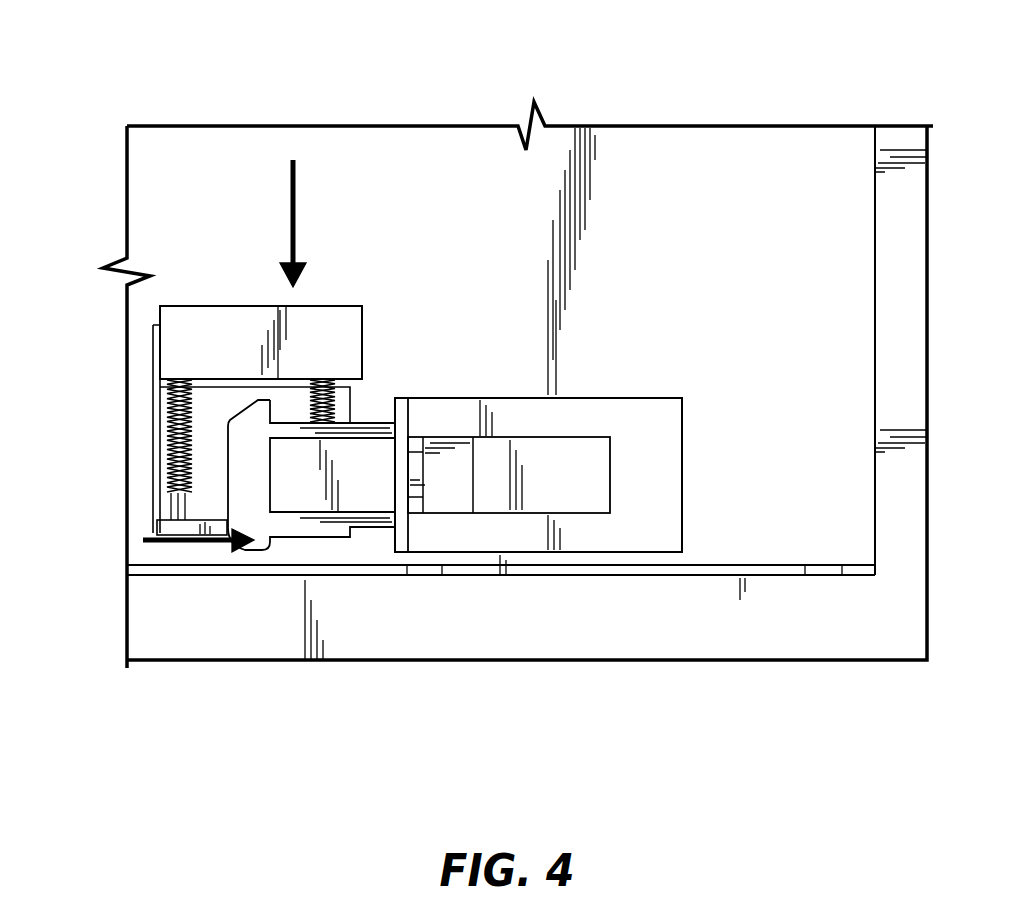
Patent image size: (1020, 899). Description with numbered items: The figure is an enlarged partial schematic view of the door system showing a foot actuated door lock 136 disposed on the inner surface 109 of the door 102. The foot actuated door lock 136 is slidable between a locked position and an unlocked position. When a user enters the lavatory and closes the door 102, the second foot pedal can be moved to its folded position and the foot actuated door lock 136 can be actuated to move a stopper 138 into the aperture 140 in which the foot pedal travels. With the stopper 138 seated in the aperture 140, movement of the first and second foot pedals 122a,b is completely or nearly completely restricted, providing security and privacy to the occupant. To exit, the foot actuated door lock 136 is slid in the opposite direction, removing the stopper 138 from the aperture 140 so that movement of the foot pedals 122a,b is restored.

The door 102 is at (335, 102).
The inner surface 109 is at (433, 162).
The first and second foot pedals 122a,b is at (187, 327).
The aperture 140 is at (207, 475).
The stopper 138 is at (288, 478).
The foot actuated door lock 136 is at (418, 533).